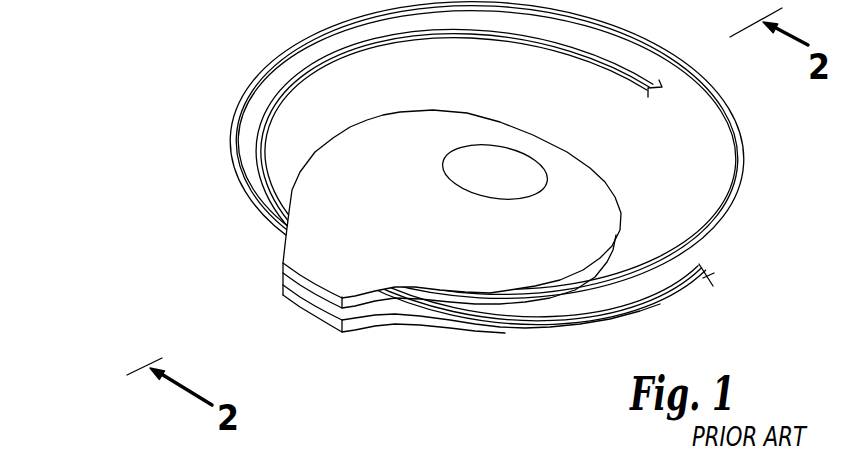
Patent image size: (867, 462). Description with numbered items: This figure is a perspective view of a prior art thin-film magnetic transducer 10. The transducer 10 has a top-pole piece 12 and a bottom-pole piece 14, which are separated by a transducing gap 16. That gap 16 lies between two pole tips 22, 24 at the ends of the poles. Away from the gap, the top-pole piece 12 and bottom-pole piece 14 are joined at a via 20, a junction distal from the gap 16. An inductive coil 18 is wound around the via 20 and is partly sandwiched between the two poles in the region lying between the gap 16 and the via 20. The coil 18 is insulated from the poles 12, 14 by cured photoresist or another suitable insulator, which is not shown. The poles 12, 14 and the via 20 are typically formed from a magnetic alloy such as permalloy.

The thin-film magnetic transducer 10 is at (448, 196).
The top-pole piece 12 is at (399, 142).
The bottom-pole piece 14 is at (438, 318).
The transducing gap 16 is at (282, 292).
The inductive coil 18 is at (644, 38).
The via 20 is at (505, 175).
The pole tip 22 is at (282, 277).
The pole tip 24 is at (312, 317).